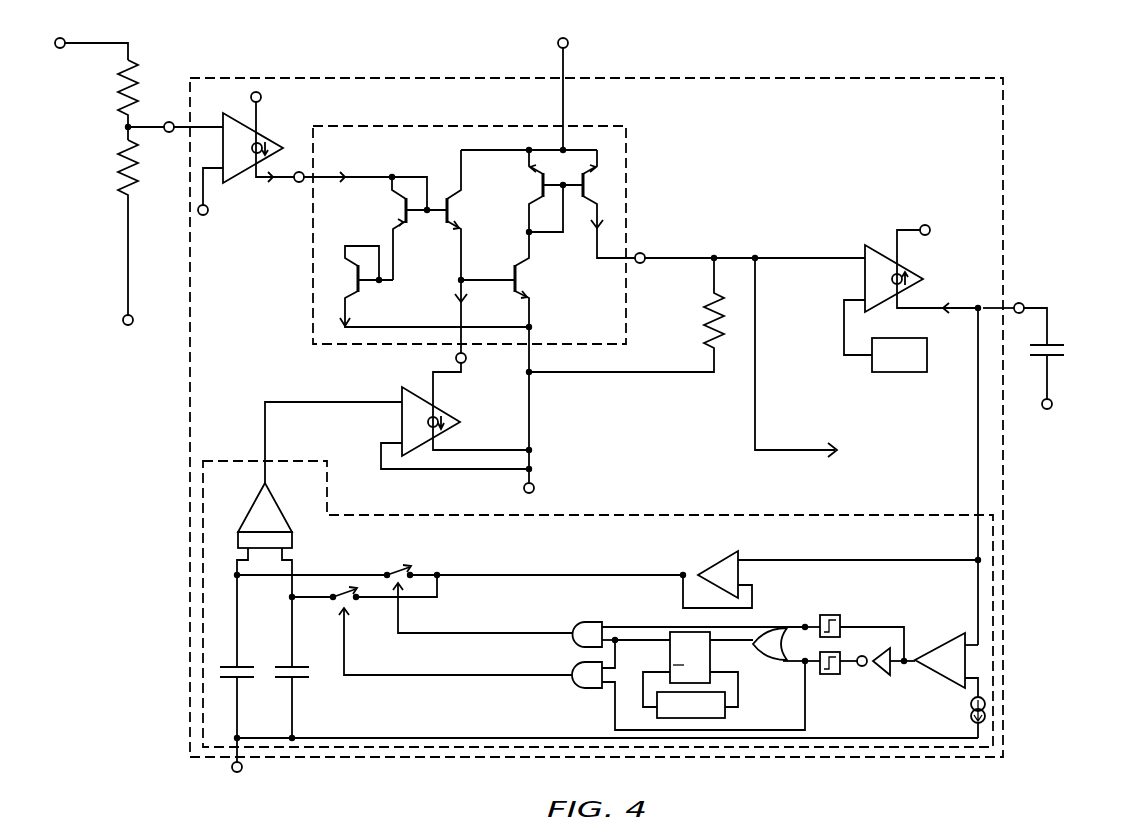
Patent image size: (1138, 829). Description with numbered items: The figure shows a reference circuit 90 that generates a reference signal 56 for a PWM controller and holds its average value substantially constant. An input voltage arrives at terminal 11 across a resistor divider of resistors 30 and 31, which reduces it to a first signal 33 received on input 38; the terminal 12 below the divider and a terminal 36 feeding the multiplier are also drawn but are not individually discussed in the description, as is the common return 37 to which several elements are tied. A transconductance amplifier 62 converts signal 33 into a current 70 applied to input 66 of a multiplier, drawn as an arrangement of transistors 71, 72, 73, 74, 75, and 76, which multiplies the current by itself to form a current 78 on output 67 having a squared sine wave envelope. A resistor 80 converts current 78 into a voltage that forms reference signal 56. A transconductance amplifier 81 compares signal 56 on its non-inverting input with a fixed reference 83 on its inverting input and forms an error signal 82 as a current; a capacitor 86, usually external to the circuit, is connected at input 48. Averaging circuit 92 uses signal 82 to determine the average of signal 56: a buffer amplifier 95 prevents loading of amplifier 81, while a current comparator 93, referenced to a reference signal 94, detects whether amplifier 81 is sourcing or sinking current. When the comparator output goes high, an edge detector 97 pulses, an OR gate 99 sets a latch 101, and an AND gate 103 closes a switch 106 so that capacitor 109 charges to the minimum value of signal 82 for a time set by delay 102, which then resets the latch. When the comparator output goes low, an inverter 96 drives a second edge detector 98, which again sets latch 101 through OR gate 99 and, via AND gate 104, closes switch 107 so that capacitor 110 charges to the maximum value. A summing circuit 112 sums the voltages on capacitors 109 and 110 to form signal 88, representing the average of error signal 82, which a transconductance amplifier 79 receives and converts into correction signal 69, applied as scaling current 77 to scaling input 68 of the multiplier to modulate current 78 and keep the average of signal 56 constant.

The input terminal 11 is at (65, 40).
The ground terminal 12 is at (123, 324).
The resistor 30 is at (115, 87).
The resistor 31 is at (115, 170).
The first signal 33 is at (145, 130).
The supply terminal 36 is at (568, 42).
The return 37 is at (261, 96).
The input 38 is at (168, 120).
The input 48 is at (1023, 303).
The reference signal 56 is at (760, 355).
The transconductance amplifier 62 is at (240, 173).
The input 66 is at (297, 182).
The output 67 is at (642, 263).
The scaling input 68 is at (466, 362).
The correction signal 69 is at (440, 366).
The current 70 is at (343, 163).
The transistor 71 is at (363, 293).
The transistor 72 is at (398, 208).
The transistor 73 is at (462, 211).
The transistor 74 is at (524, 279).
The transistor 75 is at (535, 183).
The transistor 76 is at (600, 183).
The scaling current 77 is at (443, 296).
The current 78 is at (601, 222).
The transconductance amplifier 79 is at (460, 428).
The resistor 80 is at (703, 330).
The transconductance amplifier 81 is at (880, 250).
The error signal 82 is at (933, 303).
The fixed reference circuit 83 is at (900, 372).
The capacitor 86 is at (1057, 342).
The signal 88 is at (345, 401).
The reference circuit 90 is at (1003, 168).
The averaging circuit 92 is at (665, 515).
The current comparator 93 is at (943, 640).
The reference signal 94 is at (968, 712).
The amplifier 95 is at (722, 562).
The inverter 96 is at (875, 676).
The edge detector 97 is at (827, 612).
The edge detector 98 is at (830, 675).
The OR gate 99 is at (770, 660).
The latch 101 is at (670, 657).
The delay circuit 102 is at (730, 712).
The AND gate 103 is at (590, 620).
The AND gate 104 is at (590, 690).
The switch 106 is at (400, 562).
The switch 107 is at (355, 605).
The capacitor 109 is at (240, 658).
The capacitor 110 is at (298, 658).
The summing circuit 112 is at (283, 515).